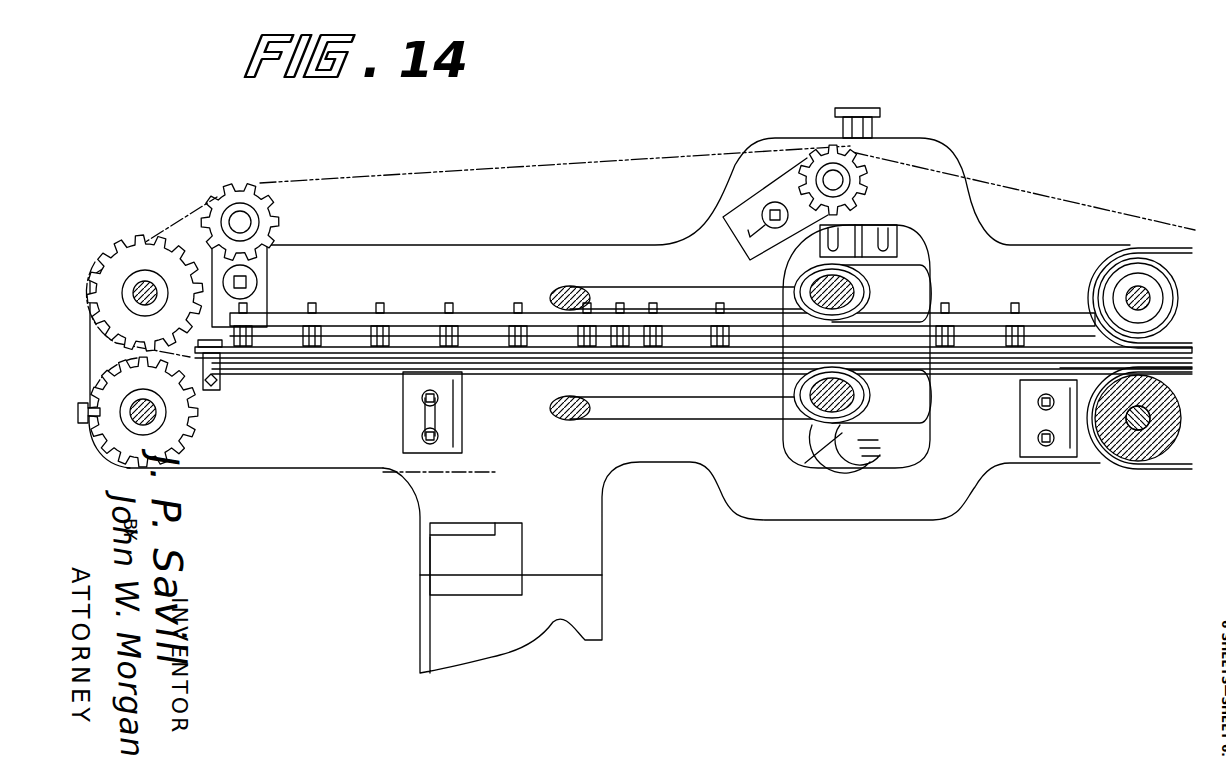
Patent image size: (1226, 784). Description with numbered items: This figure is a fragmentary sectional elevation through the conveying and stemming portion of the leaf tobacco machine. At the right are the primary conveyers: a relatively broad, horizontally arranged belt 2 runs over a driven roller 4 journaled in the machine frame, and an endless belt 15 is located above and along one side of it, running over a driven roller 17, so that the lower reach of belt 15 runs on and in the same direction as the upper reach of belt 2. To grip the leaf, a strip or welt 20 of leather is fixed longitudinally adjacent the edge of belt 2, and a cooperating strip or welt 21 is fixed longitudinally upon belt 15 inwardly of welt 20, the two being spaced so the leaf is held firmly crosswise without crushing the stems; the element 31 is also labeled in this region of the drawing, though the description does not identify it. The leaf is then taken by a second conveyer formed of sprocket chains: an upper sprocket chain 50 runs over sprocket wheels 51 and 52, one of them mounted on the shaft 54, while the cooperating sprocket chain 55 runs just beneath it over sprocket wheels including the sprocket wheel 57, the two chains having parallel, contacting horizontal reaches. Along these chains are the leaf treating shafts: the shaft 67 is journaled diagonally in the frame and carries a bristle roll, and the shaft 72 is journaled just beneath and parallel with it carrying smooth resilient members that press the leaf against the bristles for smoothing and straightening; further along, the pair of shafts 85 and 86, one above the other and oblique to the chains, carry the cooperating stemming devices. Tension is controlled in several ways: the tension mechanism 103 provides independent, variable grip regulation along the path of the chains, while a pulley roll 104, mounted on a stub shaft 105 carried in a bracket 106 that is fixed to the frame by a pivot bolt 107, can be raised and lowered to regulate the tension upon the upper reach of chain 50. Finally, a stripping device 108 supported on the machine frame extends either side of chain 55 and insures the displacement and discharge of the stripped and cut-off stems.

The belt 2 is at (1180, 378).
The roller 4 is at (1165, 435).
The endless belt 15 is at (1168, 338).
The roller 17 is at (1165, 292).
The strip or welt 20 is at (1180, 370).
The strip or welt 21 is at (1158, 245).
The rail plate 31 is at (1180, 345).
The upper sprocket chain 50 is at (612, 153).
The sprocket wheel 51 is at (133, 294).
The sprocket wheel 52 is at (105, 270).
The shaft 54 is at (143, 420).
The sprocket chain 55 is at (283, 468).
The sprocket wheel 57 is at (200, 412).
The shaft 67 is at (897, 288).
The shaft 72 is at (885, 397).
The shaft 85 is at (672, 297).
The shaft 86 is at (740, 420).
The tension mechanism 103 is at (565, 356).
The pulley roll 104 is at (855, 188).
The stub shaft 105 is at (828, 180).
The bracket 106 is at (758, 205).
The pivot bolt 107 is at (770, 230).
The stripping device 108 is at (82, 410).